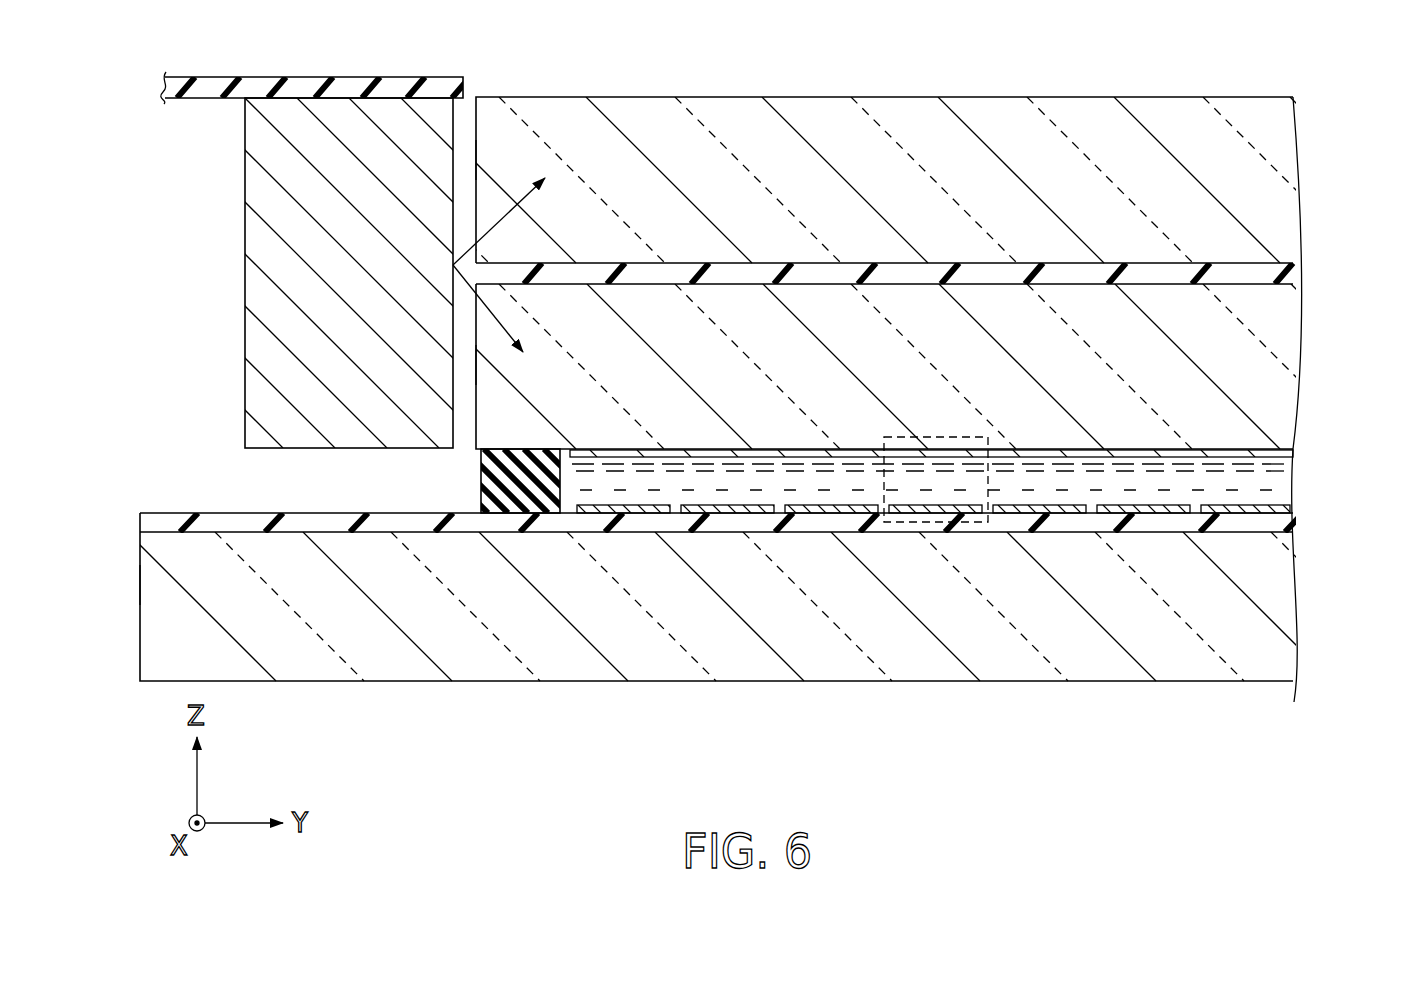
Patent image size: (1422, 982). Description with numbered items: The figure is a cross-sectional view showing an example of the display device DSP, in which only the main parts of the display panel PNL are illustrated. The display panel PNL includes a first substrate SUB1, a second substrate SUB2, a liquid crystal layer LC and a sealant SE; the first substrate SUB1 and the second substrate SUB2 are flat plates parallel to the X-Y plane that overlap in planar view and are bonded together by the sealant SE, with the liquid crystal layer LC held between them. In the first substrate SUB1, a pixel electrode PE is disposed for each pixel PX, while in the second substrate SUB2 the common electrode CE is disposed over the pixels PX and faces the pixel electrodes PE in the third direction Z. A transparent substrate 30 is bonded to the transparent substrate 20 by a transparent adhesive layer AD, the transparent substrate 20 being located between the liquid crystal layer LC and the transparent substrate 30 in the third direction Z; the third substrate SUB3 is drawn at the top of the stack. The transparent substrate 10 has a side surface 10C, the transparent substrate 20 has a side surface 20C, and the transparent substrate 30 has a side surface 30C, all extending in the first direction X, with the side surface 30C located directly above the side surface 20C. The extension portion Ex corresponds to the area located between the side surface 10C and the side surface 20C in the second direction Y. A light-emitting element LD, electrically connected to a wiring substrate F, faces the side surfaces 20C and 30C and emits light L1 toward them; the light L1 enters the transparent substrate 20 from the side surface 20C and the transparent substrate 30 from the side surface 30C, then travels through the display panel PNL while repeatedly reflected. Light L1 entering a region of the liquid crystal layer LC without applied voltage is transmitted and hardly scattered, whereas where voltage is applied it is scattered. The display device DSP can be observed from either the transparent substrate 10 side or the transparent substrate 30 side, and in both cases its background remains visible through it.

The wiring substrate F is at (316, 85).
The light-emitting element LD is at (262, 228).
The third substrate SUB3 is at (1300, 160).
The transparent substrate 30 is at (1110, 145).
The side surface 30C is at (474, 161).
The transparent adhesive layer AD is at (1296, 282).
The transparent substrate 20 is at (1198, 302).
The second substrate SUB2 is at (1302, 380).
The side surface 20C is at (474, 365).
The light L1 is at (505, 318).
The sealant SE is at (481, 491).
The common electrode CE is at (1219, 451).
The liquid crystal layer LC is at (863, 496).
The pixel electrode PE is at (950, 514).
The pixel PX is at (948, 436).
The extension portion Ex is at (344, 511).
The first substrate SUB1 is at (1302, 611).
The side surface 10C is at (138, 588).
The transparent substrate 10 is at (639, 662).
The display panel PNL is at (1160, 684).
The display device DSP is at (1258, 686).